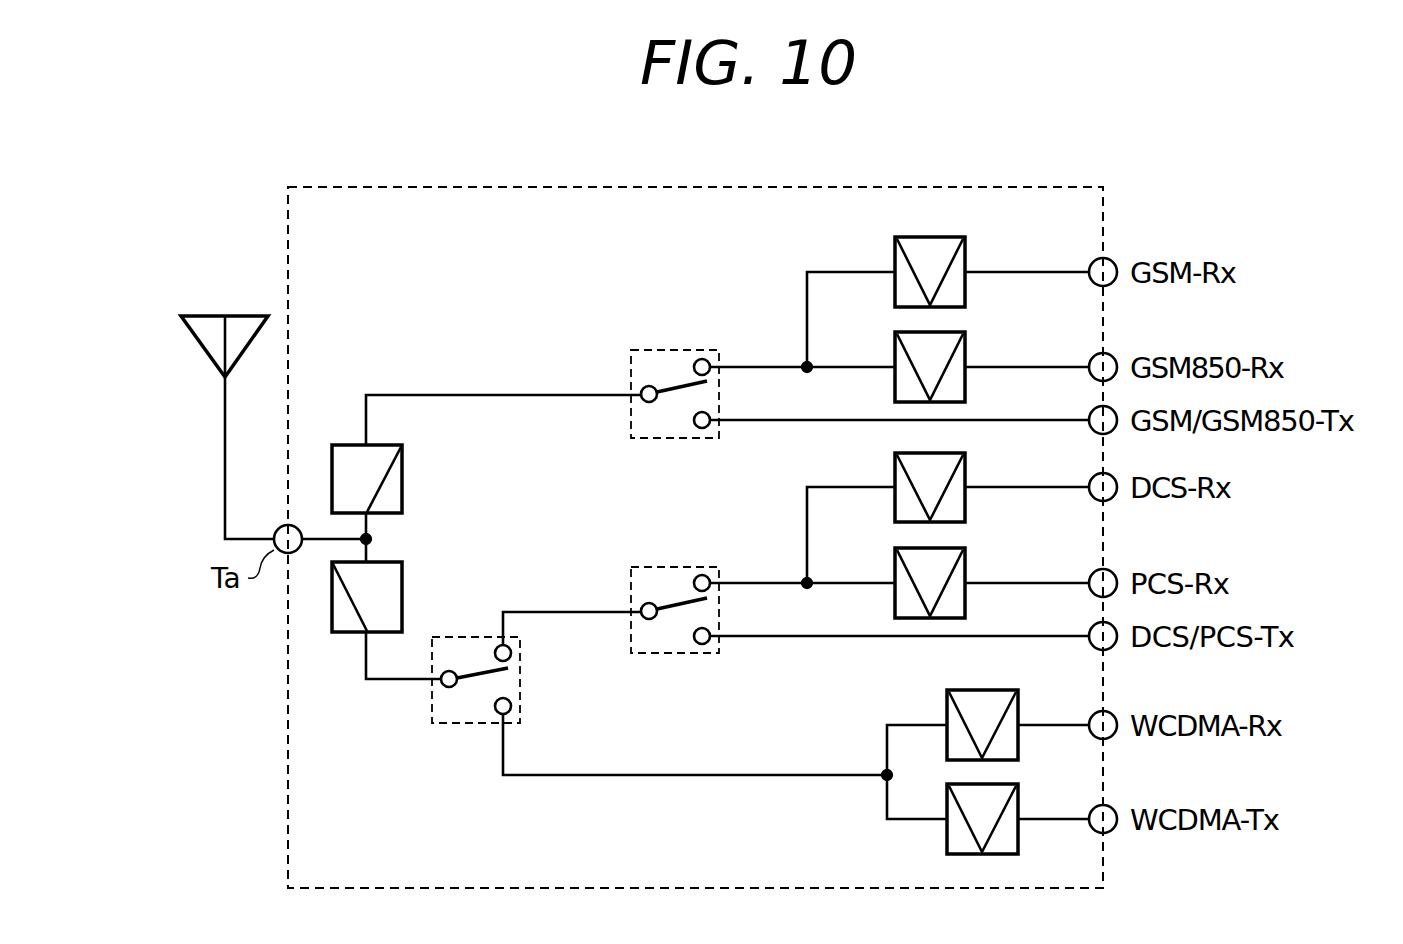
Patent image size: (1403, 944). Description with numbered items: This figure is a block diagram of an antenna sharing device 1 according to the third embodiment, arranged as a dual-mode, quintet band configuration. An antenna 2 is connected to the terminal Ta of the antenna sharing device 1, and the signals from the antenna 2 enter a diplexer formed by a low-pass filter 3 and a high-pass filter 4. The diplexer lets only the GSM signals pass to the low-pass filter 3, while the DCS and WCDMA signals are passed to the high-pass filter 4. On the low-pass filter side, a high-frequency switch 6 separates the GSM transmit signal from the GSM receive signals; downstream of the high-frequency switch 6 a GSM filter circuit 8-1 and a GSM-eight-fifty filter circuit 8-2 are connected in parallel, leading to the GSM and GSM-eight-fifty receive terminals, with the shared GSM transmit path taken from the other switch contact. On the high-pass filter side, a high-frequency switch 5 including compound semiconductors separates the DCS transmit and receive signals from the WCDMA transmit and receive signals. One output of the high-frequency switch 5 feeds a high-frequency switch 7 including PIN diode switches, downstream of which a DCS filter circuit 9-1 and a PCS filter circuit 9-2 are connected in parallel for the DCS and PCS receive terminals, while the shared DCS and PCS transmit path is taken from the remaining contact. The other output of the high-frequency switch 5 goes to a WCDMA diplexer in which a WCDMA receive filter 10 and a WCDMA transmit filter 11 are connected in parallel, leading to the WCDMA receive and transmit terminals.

The antenna sharing device 1 is at (455, 187).
The antenna 2 is at (210, 315).
The low-pass filter 3 is at (404, 473).
The high-pass filter 4 is at (404, 591).
The high-frequency switch 5 is at (522, 665).
The high-frequency switch 6 is at (659, 350).
The high-frequency switch 7 is at (659, 563).
The GSM filter circuit 8-1 is at (965, 255).
The GSM-850 filter circuit 8-2 is at (965, 350).
The DCS filter circuit 9-1 is at (965, 471).
The PCS filter circuit 9-2 is at (965, 566).
The WCDMA receive filter 10 is at (1019, 712).
The WCDMA transmit filter 11 is at (1019, 806).